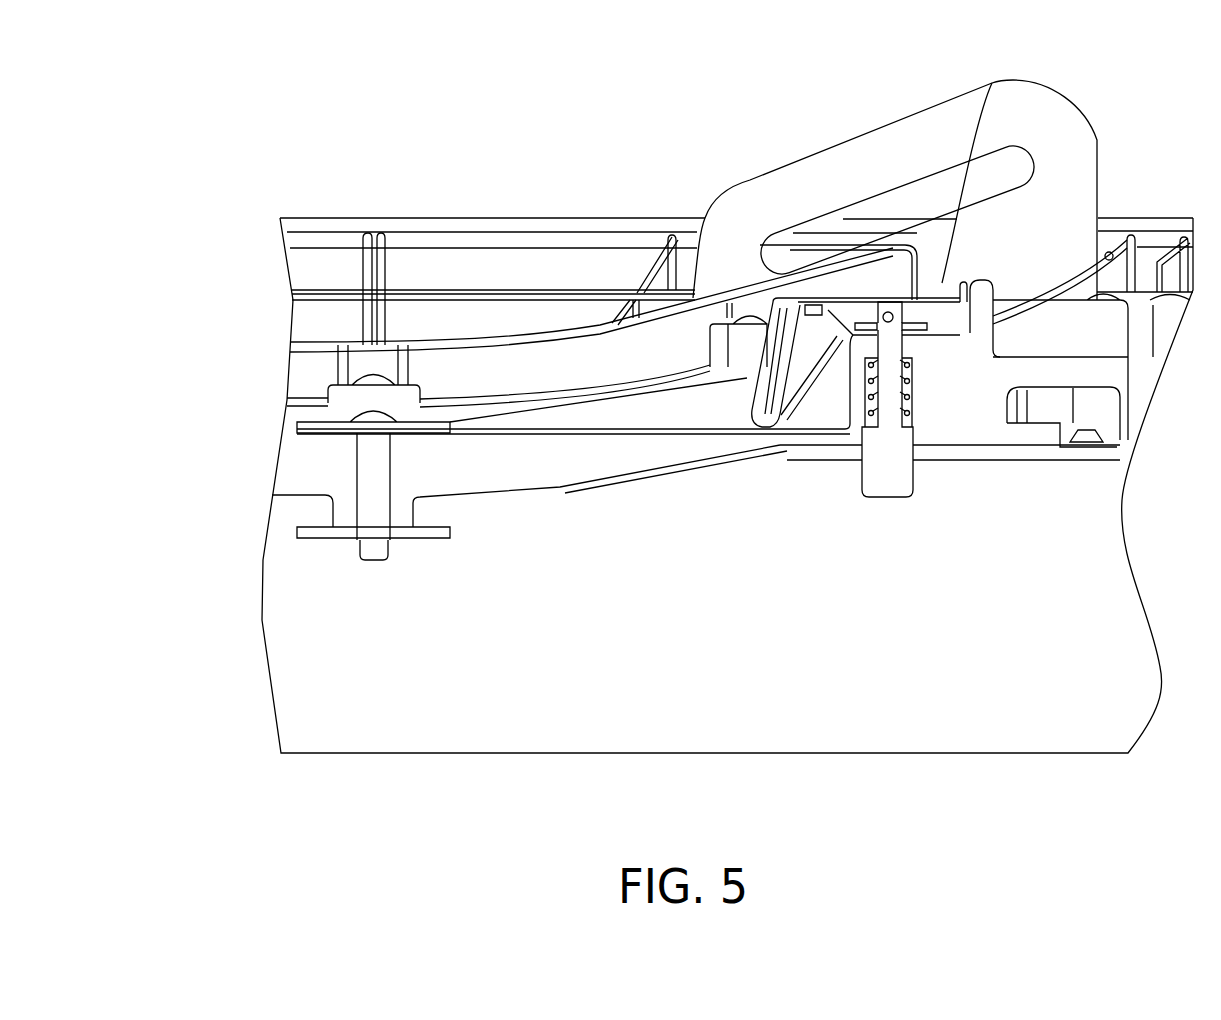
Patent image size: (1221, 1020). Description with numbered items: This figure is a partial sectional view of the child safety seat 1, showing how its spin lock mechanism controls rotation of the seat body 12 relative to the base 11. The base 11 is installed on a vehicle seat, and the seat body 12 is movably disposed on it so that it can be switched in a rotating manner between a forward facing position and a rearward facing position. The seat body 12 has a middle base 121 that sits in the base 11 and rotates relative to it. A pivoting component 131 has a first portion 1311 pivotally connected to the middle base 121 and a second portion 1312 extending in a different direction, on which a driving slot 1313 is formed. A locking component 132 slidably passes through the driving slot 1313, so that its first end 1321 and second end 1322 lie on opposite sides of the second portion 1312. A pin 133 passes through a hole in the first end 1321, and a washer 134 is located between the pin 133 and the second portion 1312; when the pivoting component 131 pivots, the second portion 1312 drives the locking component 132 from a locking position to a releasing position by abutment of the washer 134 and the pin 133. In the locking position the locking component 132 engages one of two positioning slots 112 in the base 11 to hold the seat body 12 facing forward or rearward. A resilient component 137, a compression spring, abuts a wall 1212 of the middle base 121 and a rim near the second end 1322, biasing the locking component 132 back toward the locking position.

The child safety seat 1 is at (172, 108).
The base 11 is at (485, 727).
The positioning slot 112 is at (910, 498).
The seat body 12 is at (441, 200).
The middle base 121 is at (555, 218).
The wall 1212 is at (867, 358).
The pivoting component 131 is at (705, 76).
The first portion 1311 is at (780, 375).
The second portion 1312 is at (867, 333).
The driving slot 1313 is at (920, 333).
The locking component 132 is at (885, 460).
The first end 1321 is at (893, 305).
The second end 1322 is at (887, 497).
The pin 133 is at (888, 312).
The washer 134 is at (992, 83).
The resilient component 137 is at (872, 417).